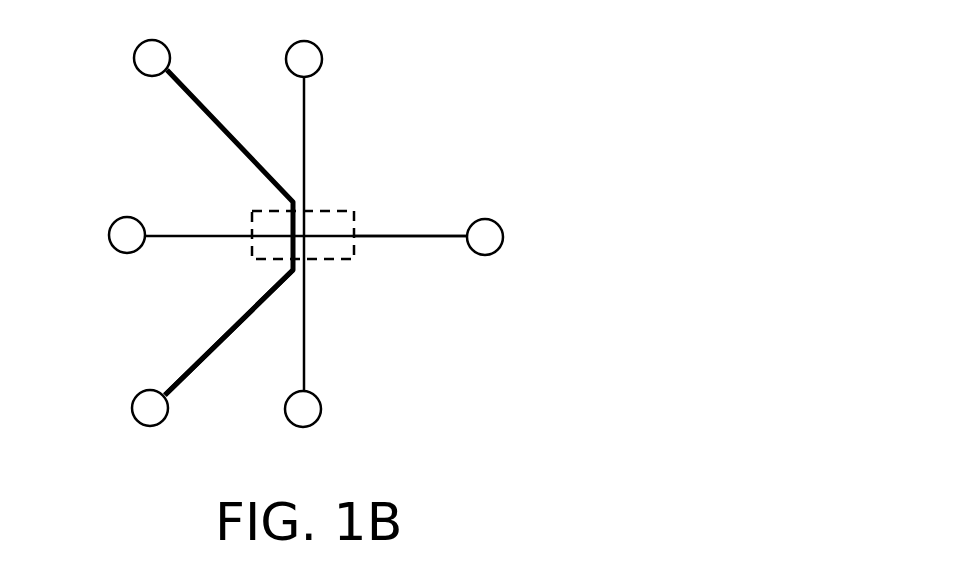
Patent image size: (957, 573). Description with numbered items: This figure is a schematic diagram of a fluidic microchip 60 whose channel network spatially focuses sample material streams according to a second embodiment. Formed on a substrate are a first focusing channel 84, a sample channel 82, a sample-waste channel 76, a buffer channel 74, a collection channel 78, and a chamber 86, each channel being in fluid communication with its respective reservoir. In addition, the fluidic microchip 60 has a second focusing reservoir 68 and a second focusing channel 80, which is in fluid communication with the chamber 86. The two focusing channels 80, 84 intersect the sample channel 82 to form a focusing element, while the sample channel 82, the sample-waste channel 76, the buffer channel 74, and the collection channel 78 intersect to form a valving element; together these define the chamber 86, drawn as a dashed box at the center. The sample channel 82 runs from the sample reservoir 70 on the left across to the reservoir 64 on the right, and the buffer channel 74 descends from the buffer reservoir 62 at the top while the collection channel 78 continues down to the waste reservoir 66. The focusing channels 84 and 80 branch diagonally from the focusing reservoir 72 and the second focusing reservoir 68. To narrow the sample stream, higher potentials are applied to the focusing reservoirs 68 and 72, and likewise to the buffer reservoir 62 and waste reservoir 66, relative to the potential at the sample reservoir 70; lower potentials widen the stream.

The fluidic microchip 60 is at (740, 232).
The buffer reservoir 62 is at (322, 60).
The reservoir 64 is at (468, 240).
The waste reservoir 66 is at (322, 411).
The second focusing reservoir 68 is at (136, 420).
The sample reservoir 70 is at (120, 253).
The focusing reservoir 72 is at (145, 73).
The buffer channel 74 is at (305, 117).
The sample-waste channel 76 is at (432, 237).
The collection channel 78 is at (305, 370).
The second focusing channel 80 is at (197, 367).
The sample channel 82 is at (167, 237).
The first focusing channel 84 is at (188, 95).
The chamber 86 is at (345, 211).